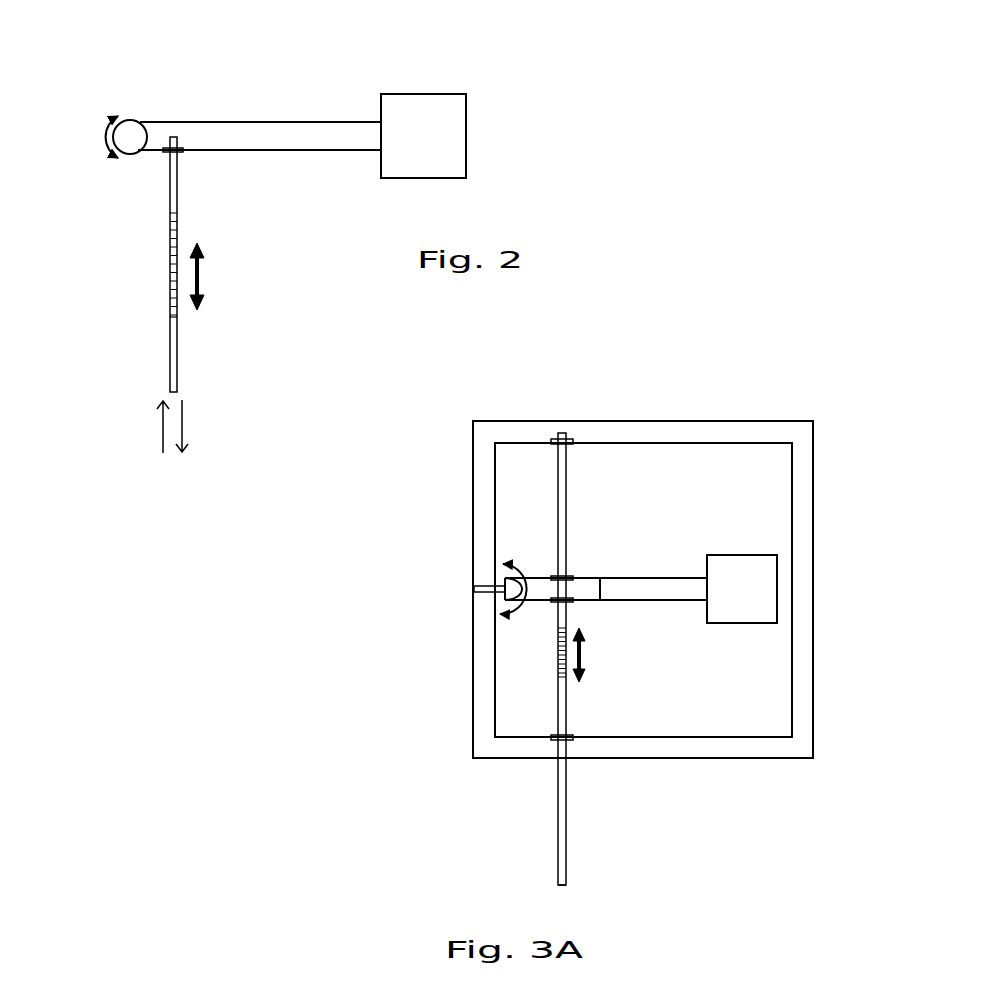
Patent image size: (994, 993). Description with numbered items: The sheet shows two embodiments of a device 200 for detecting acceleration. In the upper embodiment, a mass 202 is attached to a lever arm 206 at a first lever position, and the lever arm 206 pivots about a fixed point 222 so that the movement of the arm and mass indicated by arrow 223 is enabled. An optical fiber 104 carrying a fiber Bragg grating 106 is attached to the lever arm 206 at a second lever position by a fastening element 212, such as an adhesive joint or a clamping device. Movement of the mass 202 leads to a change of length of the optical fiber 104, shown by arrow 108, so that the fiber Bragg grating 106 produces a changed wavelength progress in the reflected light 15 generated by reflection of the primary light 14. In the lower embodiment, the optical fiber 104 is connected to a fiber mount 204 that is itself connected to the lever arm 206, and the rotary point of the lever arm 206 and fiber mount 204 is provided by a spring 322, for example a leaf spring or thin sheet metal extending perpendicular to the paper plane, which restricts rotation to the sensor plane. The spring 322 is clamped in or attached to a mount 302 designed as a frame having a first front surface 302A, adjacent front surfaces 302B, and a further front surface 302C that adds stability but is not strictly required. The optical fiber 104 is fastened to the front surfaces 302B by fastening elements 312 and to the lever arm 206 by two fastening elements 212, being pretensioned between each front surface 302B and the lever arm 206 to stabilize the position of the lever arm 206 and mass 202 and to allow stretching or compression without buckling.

In FIG. 2, the device for detecting acceleration 200 is at (142, 75).
In FIG. 3A, the device for detecting acceleration 200 is at (825, 368).
In FIG. 2, the mass 202 is at (430, 100).
In FIG. 3A, the mass 202 is at (752, 617).
In FIG. 3A, the fiber mount 204 is at (535, 596).
In FIG. 2, the lever arm 206 is at (283, 135).
In FIG. 3A, the lever arm 206 is at (657, 590).
In FIG. 2, the fastening element 212 is at (180, 153).
In FIG. 3A, the fastening element 212 is at (572, 577).
In FIG. 2, the fixed point 222 is at (133, 154).
In FIG. 2, the arrow 223 is at (103, 143).
In FIG. 3A, the arrow 223 is at (515, 568).
In FIG. 2, the fiber Bragg grating 106 is at (158, 260).
In FIG. 3A, the fiber Bragg grating 106 is at (555, 650).
In FIG. 2, the arrow 108 is at (200, 275).
In FIG. 3A, the arrow 108 is at (585, 655).
In FIG. 2, the optical fiber 104 is at (175, 362).
In FIG. 3A, the optical fiber 104 is at (565, 855).
In FIG. 2, the primary light 14 is at (160, 428).
In FIG. 2, the reflected light 15 is at (187, 428).
In FIG. 3A, the mount 302 is at (468, 682).
In FIG. 3A, the first front surface 302A is at (482, 537).
In FIG. 3A, the front surfaces 302B is at (661, 425).
In FIG. 3A, the further front surface 302C is at (807, 535).
In FIG. 3A, the fastening elements 312 is at (568, 447).
In FIG. 3A, the spring 322 is at (483, 590).